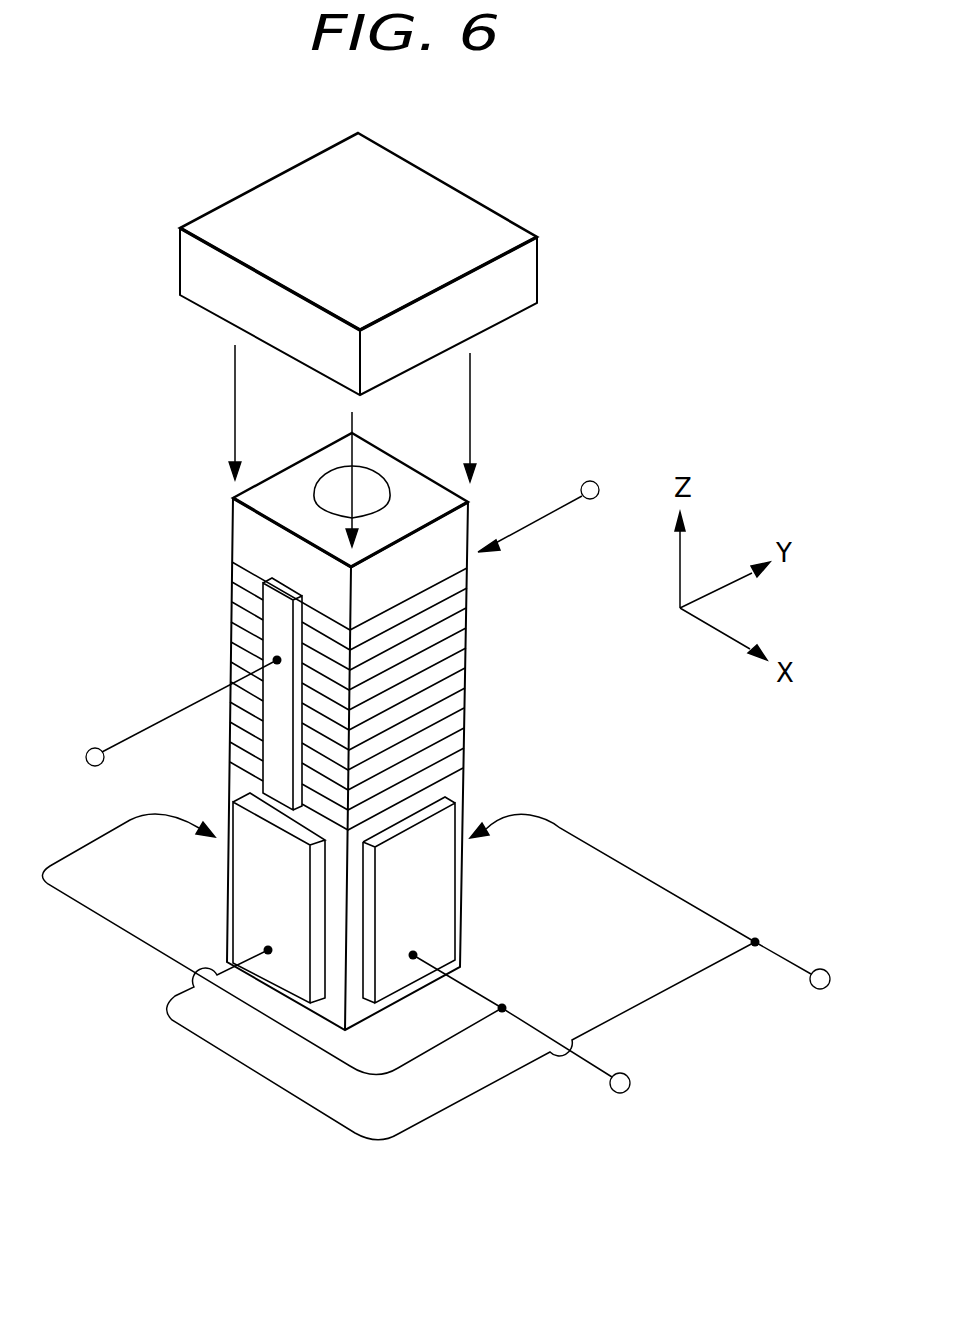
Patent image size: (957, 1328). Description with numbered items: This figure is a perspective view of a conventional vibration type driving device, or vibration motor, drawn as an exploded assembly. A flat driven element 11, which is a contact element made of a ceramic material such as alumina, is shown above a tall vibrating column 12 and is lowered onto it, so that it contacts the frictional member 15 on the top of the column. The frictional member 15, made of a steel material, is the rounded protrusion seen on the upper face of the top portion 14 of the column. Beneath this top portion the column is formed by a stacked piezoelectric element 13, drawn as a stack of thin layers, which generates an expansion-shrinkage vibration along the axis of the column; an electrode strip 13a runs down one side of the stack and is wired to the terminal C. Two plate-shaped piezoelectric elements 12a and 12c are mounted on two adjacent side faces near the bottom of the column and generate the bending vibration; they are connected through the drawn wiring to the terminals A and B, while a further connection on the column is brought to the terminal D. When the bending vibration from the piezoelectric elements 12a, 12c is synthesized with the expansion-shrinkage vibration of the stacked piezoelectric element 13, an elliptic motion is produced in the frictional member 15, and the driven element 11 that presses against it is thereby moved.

The driven element 11 is at (513, 305).
The laminated piezoelectric actuator body 12 is at (453, 788).
The piezoelectric element 12a is at (440, 907).
The piezoelectric element 12c is at (247, 903).
The stacked piezoelectric element 13 is at (480, 566).
The external electrode strip 13a is at (270, 607).
The top plate of actuator 14 is at (237, 537).
The frictional member 15 is at (330, 484).
The terminal A is at (622, 1093).
The terminal B is at (824, 989).
The terminal C is at (91, 748).
The terminal D is at (596, 481).